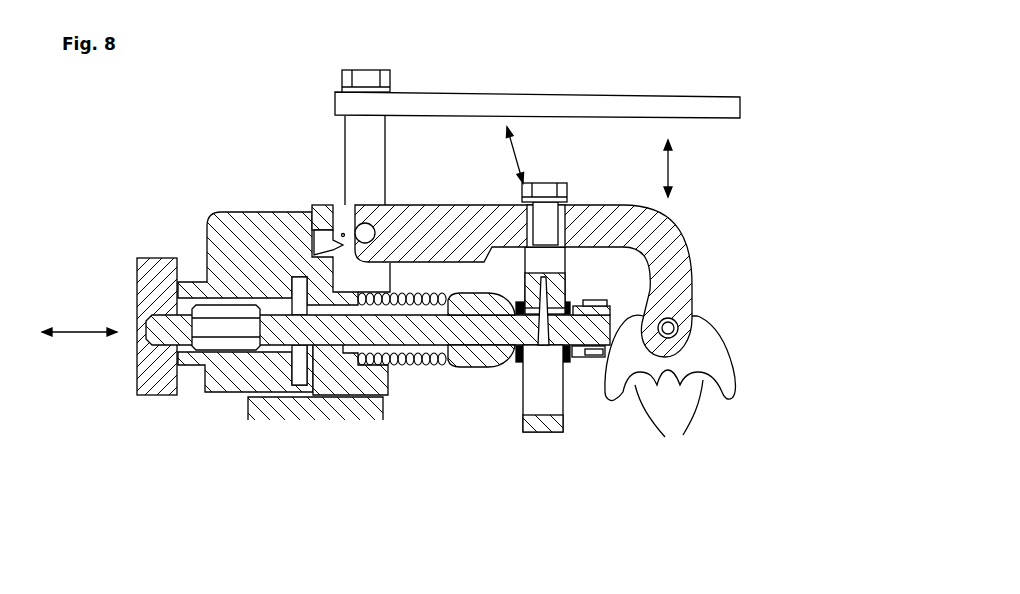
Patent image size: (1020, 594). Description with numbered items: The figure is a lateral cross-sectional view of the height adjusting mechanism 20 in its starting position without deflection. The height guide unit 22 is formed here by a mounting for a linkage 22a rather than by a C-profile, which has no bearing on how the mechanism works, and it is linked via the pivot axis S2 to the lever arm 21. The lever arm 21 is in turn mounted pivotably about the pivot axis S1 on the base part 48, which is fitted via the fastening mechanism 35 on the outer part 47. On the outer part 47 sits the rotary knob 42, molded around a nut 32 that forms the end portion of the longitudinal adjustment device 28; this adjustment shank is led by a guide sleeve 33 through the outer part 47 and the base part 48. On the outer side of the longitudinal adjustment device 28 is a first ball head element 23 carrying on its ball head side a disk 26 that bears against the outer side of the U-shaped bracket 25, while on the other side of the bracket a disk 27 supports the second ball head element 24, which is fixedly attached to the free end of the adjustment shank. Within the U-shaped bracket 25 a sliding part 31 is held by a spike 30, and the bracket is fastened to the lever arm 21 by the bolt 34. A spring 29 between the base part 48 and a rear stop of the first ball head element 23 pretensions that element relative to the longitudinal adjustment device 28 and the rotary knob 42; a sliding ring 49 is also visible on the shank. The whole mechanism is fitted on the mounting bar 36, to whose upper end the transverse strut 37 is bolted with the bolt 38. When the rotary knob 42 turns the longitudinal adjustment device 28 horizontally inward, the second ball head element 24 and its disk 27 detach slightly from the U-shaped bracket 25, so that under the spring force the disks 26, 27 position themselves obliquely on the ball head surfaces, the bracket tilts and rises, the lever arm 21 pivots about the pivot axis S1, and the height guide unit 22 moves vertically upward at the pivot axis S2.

The height adjusting mechanism 20 is at (167, 178).
The lever arm 21 is at (466, 216).
The height guide unit 22 is at (737, 375).
The linkage (mounting) 22a is at (669, 422).
The first ball head element 23 is at (477, 367).
The second ball head element 24 is at (575, 353).
The U-shaped bracket 25 is at (543, 427).
The disk 26 is at (518, 360).
The disk 27 is at (572, 350).
The longitudinal adjustment device 28 is at (282, 327).
The spring (longitudinal adjustment device) 29 is at (435, 365).
The spike 30 is at (537, 307).
The sliding part 31 is at (557, 285).
The nut 32 is at (213, 327).
The guide sleeve 33 is at (343, 353).
The bolt (U-shaped bracket) 34 is at (547, 190).
The fastening mechanism (base part) 35 is at (293, 205).
The mounting bar 36 is at (358, 152).
The transverse strut 37 is at (600, 102).
The bolt 38 is at (345, 70).
The rotary knob (height adjusting mechanism) 42 is at (148, 298).
The outer part, height adjusting mechanism 47 is at (245, 200).
The base part, height adjusting mechanism 48 is at (373, 385).
The sliding ring (stroke setting element) 49 is at (605, 320).
The pivot axis S1 is at (342, 228).
The pivot axis S2 is at (670, 327).